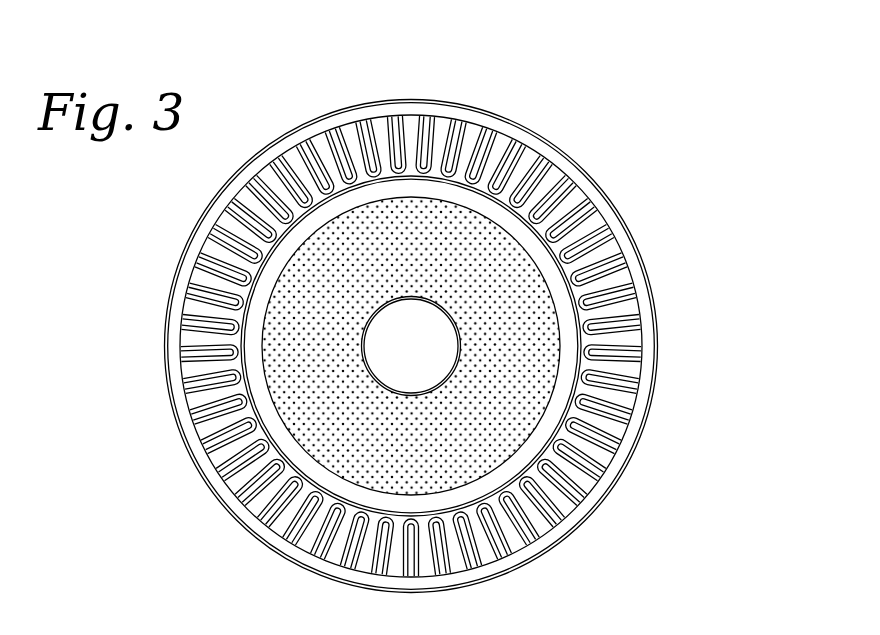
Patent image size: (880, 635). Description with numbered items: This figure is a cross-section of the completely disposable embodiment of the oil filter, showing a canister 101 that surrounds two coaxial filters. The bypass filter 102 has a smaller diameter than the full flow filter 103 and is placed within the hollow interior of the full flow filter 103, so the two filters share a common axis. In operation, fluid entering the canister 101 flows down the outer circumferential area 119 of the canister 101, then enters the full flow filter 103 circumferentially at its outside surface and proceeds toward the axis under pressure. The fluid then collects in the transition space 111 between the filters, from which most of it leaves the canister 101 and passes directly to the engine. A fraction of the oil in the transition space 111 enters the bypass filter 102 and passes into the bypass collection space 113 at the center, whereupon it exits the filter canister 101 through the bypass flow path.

The canister 101 is at (630, 507).
The bypass filter 102 is at (500, 380).
The full flow filter 103 is at (585, 232).
The transition space 111 is at (562, 332).
The bypass collection space 113 is at (405, 341).
The outer circumferential area 119 is at (647, 341).